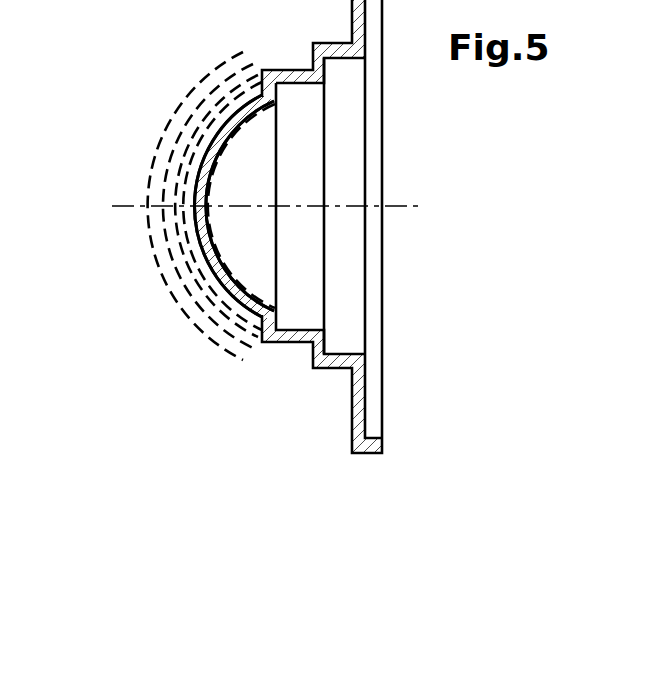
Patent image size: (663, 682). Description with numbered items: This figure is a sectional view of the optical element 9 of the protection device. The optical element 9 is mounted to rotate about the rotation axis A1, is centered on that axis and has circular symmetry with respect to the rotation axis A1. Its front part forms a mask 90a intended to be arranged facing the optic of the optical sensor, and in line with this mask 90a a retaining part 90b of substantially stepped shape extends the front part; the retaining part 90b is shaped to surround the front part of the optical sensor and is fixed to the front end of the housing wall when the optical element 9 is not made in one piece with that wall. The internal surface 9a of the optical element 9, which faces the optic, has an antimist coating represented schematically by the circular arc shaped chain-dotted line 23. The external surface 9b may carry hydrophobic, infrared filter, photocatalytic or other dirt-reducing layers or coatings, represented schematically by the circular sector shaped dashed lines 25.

The optical element 9 is at (203, 245).
The internal surface 9a is at (233, 130).
The external surface 9b is at (212, 280).
The chain-dotted line 23 is at (245, 274).
The dashed lines 25 is at (150, 144).
The mask 90a is at (240, 113).
The retaining part 90b is at (282, 372).
The rotation axis A1 is at (428, 192).